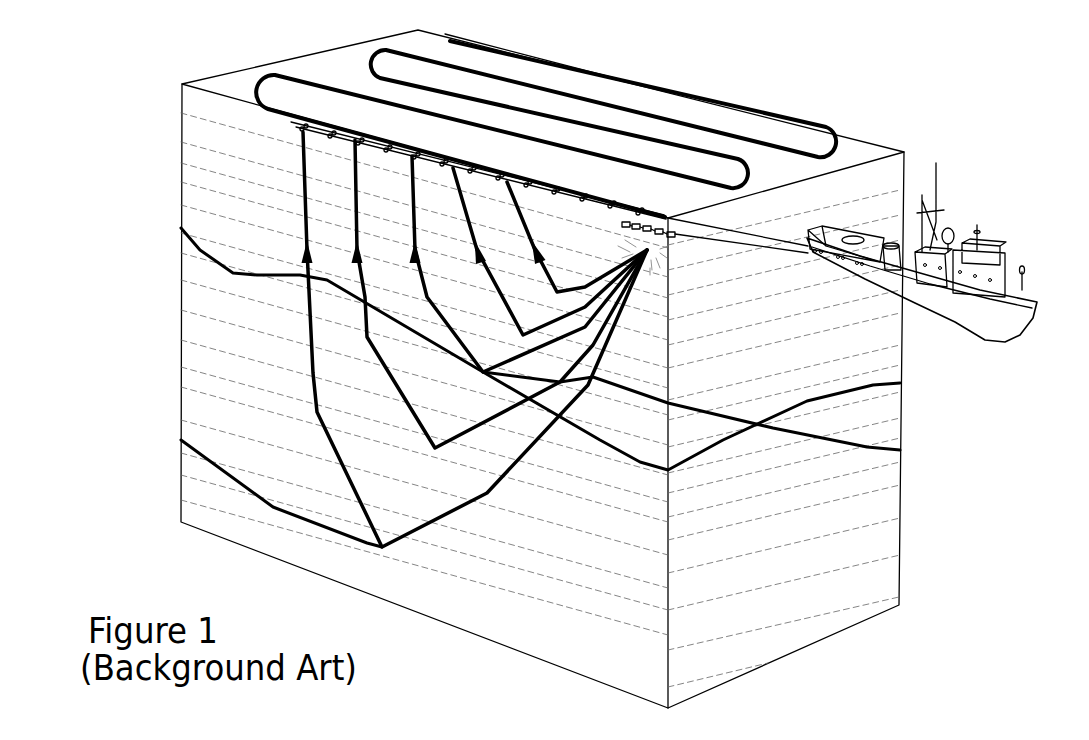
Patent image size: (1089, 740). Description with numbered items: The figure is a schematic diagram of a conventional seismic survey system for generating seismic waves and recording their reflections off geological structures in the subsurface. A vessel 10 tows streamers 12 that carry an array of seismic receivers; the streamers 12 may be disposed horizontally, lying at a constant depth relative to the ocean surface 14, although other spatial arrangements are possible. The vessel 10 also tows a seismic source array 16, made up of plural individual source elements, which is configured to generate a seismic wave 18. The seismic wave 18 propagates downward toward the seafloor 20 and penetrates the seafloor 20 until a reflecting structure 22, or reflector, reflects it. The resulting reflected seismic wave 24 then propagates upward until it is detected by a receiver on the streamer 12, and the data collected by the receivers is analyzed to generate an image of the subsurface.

The vessel 10 is at (1005, 243).
The streamer 12 is at (475, 158).
The ocean surface 14 is at (331, 67).
The seismic source array 16 is at (672, 213).
The seismic wave 18 is at (900, 450).
The seafloor 20 is at (863, 387).
The reflecting structure 22 is at (382, 547).
The reflected seismic wave 24 is at (310, 315).